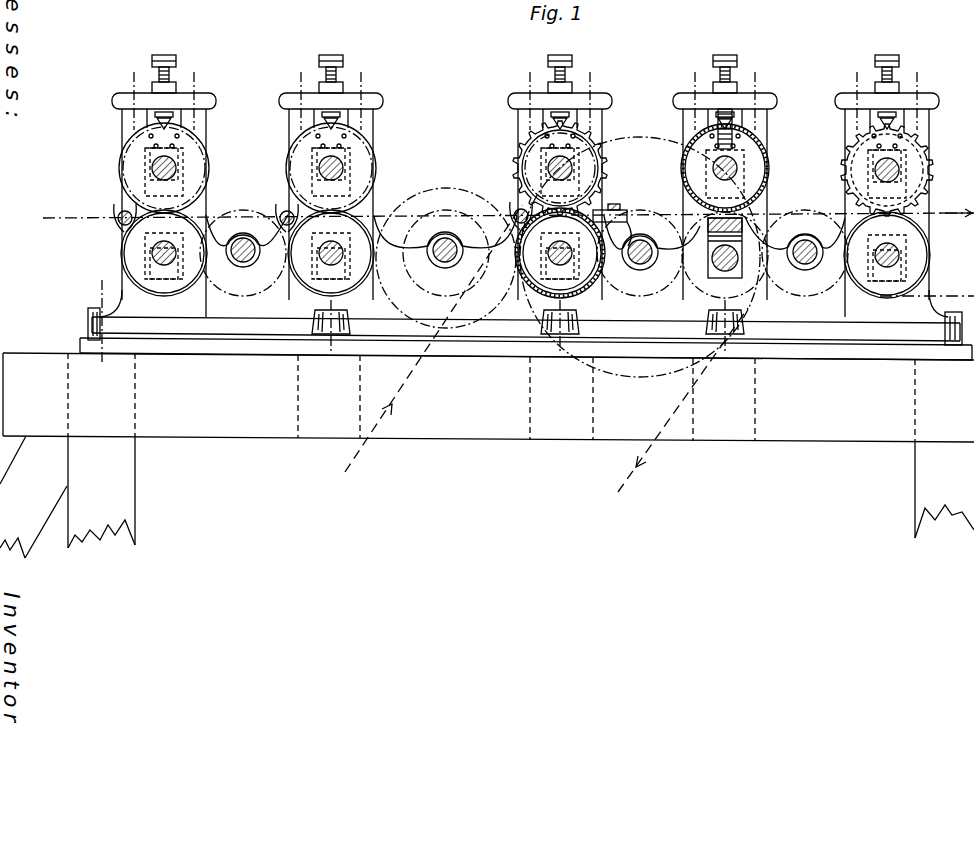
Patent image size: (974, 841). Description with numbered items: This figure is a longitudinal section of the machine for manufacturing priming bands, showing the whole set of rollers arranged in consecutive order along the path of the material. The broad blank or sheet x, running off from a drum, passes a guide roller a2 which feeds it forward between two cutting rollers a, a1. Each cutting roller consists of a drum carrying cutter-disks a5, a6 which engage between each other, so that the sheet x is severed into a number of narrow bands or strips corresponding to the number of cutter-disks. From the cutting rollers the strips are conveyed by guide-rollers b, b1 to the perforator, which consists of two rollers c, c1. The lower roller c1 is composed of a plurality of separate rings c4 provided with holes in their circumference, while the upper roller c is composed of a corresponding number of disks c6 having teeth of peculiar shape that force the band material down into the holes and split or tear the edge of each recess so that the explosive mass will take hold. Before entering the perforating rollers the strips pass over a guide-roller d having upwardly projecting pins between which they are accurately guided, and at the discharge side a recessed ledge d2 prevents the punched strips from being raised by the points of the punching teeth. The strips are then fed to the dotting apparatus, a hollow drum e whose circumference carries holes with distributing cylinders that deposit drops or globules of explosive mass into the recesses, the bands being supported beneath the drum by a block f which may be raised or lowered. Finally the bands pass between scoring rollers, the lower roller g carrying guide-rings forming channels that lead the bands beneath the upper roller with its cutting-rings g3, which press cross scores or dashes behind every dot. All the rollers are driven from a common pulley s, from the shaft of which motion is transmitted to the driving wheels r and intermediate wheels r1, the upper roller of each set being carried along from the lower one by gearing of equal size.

The cutting roller a is at (200, 171).
The cutting roller a1 is at (136, 262).
The guide roller a2 is at (120, 225).
The cutter-disk a5 is at (121, 168).
The cutter-disk a6 is at (217, 289).
The guide-roller b is at (360, 181).
The guide-roller b1 is at (300, 284).
The perforating roller c is at (590, 179).
The perforating roller c1 is at (589, 285).
The ring c4 is at (530, 290).
The disk c6 is at (522, 170).
The guide-roller d is at (514, 218).
The ledge d2 is at (604, 210).
The hollow drum e is at (748, 179).
The block f is at (743, 233).
The lower roller g is at (912, 266).
The cutting-ring g3 is at (915, 175).
The driving wheel r is at (173, 288).
The intermediate wheel r1 is at (243, 290).
The common pulley s is at (641, 141).
The blank or sheet x is at (72, 217).